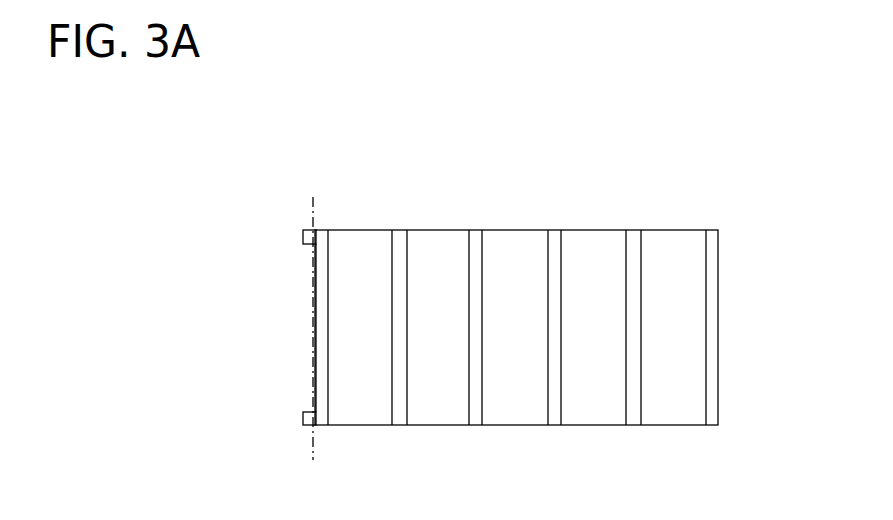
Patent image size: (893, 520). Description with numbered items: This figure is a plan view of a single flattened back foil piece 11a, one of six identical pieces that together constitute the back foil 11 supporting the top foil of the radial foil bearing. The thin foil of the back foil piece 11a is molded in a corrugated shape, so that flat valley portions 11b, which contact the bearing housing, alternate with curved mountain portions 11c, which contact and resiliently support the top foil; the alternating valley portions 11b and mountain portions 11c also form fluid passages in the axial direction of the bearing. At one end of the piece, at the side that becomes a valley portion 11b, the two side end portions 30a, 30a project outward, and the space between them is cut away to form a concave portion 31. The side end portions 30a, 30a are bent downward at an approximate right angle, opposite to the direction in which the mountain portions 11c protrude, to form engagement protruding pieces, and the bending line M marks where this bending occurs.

The back foil 11 is at (515, 269).
The back foil piece 11a is at (621, 207).
The valley portion 11b is at (322, 248).
The mountain portion 11c is at (358, 258).
The side end portion 30a is at (303, 237).
The concave portion 31 is at (315, 325).
The bending line M is at (315, 443).